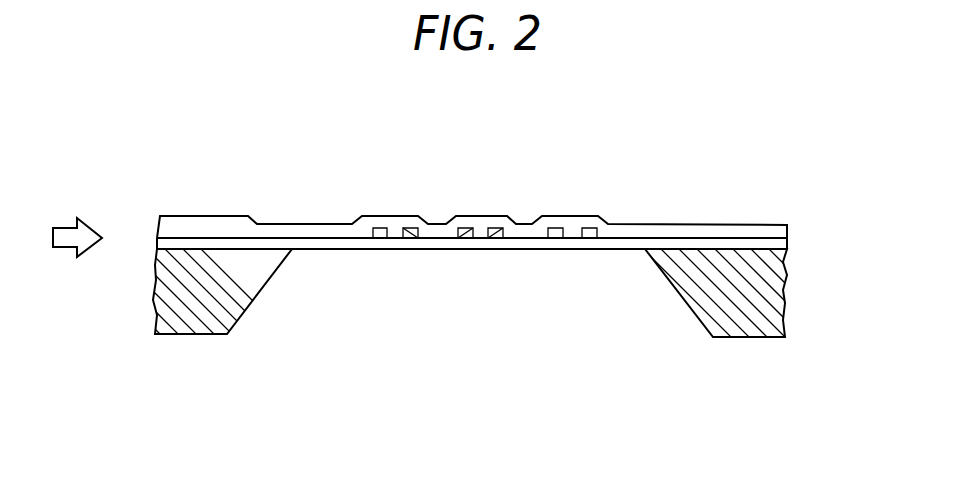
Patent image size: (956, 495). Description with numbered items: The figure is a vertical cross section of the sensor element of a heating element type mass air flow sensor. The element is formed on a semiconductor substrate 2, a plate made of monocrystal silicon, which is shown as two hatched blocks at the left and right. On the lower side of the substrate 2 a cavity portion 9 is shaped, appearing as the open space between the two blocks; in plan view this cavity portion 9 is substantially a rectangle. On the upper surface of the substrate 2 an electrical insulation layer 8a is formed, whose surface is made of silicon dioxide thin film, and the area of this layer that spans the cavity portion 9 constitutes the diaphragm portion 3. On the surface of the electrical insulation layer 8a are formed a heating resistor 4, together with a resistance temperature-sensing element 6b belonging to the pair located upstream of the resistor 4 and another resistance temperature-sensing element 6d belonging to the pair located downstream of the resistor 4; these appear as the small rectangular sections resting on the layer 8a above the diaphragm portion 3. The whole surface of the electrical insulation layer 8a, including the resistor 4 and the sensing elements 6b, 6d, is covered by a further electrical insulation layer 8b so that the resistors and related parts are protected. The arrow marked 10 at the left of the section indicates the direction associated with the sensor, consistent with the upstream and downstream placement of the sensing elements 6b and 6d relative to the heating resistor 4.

The semiconductor substrate 2 is at (760, 298).
The diaphragm portion 3 is at (523, 241).
The heating resistor 4 is at (465, 228).
The resistance temperature-sensing element 6b is at (413, 228).
The resistance temperature-sensing element 6d is at (588, 228).
The electrical insulation layer 8a is at (768, 246).
The electrical insulation layer 8b is at (755, 234).
The cavity portion 9 is at (420, 282).
The air flow direction 10 is at (63, 237).